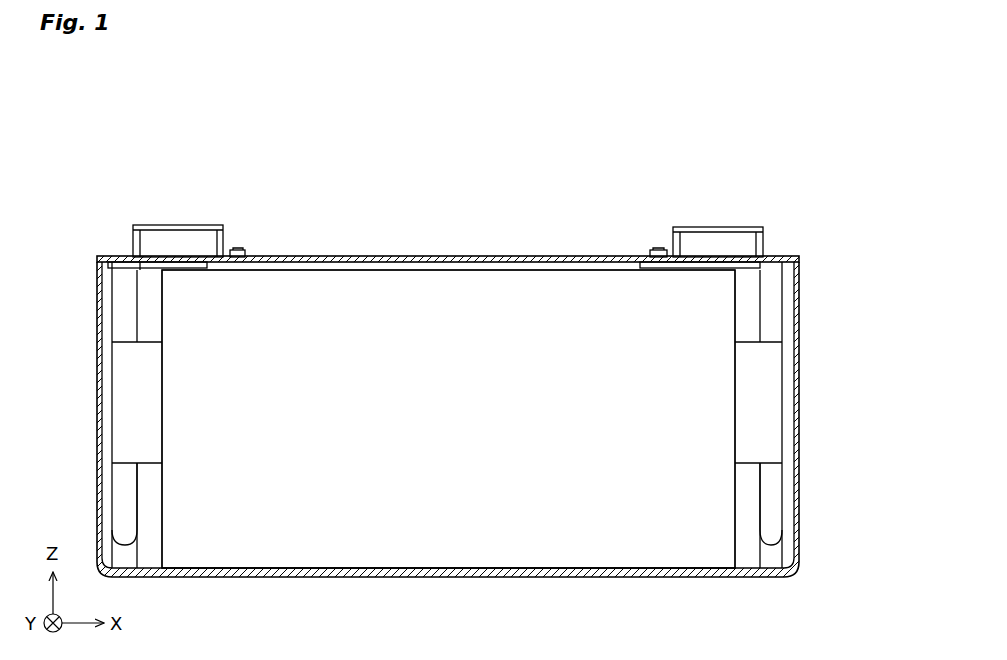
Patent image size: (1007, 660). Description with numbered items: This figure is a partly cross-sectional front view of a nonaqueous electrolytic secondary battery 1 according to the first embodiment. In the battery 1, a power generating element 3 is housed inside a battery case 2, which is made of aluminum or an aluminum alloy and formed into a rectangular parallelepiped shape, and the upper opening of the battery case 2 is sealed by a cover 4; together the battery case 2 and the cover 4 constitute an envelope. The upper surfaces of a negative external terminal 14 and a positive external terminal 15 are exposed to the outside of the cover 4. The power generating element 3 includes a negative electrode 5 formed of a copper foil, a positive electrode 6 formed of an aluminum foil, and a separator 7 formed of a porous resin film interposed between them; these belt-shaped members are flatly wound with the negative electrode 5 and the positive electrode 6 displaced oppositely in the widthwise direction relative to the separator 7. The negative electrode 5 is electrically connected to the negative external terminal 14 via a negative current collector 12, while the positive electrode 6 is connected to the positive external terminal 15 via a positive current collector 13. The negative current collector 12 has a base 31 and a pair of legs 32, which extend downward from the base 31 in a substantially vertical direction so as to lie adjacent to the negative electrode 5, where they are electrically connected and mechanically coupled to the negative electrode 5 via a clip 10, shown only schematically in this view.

The nonaqueous electrolytic secondary battery 1 is at (768, 178).
The battery case 2 is at (97, 300).
The power generating element 3 is at (580, 548).
The separator 7 is at (448, 419).
The cover 4 is at (292, 257).
The negative electrode 5 is at (152, 555).
The positive electrode 6 is at (746, 553).
The clip 10 is at (120, 435).
The negative current collector 12 is at (110, 330).
The positive current collector 13 is at (783, 316).
The negative external terminal 14 is at (180, 225).
The positive external terminal 15 is at (697, 227).
The base 31 is at (130, 264).
The legs 32 is at (122, 505).